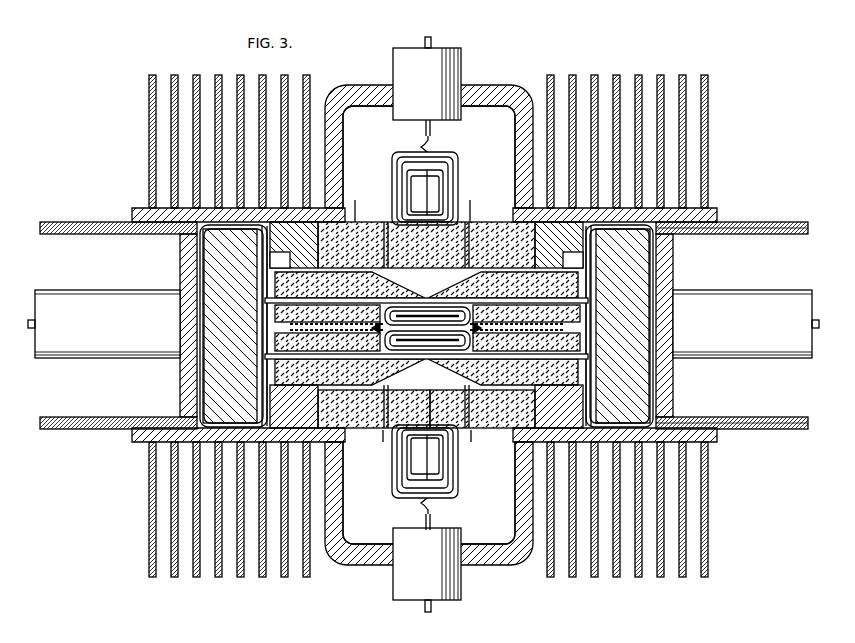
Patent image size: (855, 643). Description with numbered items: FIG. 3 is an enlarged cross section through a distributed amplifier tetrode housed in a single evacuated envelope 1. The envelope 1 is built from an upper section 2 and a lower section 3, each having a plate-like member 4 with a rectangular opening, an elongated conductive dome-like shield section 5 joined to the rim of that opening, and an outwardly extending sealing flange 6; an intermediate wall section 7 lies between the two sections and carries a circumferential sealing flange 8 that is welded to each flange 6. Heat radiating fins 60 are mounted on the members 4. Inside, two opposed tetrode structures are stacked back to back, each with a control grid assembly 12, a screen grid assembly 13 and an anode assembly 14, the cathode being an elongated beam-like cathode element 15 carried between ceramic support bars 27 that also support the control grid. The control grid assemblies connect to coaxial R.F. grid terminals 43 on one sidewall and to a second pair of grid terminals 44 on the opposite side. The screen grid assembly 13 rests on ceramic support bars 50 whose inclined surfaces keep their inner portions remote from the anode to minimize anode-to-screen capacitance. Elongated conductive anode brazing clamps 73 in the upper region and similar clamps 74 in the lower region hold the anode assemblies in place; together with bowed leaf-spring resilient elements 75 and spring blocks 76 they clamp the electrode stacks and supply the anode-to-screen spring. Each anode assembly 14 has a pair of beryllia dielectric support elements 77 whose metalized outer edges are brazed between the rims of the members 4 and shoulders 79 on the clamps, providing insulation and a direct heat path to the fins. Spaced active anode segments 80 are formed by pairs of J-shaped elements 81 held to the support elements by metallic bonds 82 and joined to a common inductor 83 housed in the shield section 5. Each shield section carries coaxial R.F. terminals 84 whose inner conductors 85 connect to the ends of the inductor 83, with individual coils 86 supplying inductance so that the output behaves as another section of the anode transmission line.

The evacuated envelope 1 is at (136, 87).
The upper envelope section 2 is at (514, 82).
The lower envelope section 3 is at (344, 566).
The plate-like member 4 is at (134, 207).
The dome-like shield section 5 is at (355, 85).
The sealing flange 6 is at (780, 222).
The intermediate wall section 7 is at (179, 253).
The circumferential sealing flange 8 is at (776, 234).
The control grid assembly 12 is at (397, 300).
The screen grid assembly 13 is at (462, 292).
The anode assembly 14 is at (349, 195).
The cathode element 15 is at (423, 351).
The ceramic support bars 27 is at (283, 318).
The coaxial R.F. grid terminals 43 is at (30, 326).
The second pair of coaxial R.F. grid terminals 44 is at (819, 323).
The ceramic support bars 50 is at (508, 283).
The heat radiating fins 60 is at (217, 76).
The upper anode brazing clamps 73 is at (283, 243).
The lower anode brazing clamps 74 is at (284, 415).
The resilient elements 75 is at (330, 262).
The spring blocks 76 is at (208, 370).
The dielectric support elements 77 is at (469, 214).
The shoulders 79 is at (322, 256).
The active anode segments 80 is at (434, 268).
The J-shaped elements 81 is at (442, 411).
The metallic bonds 82 is at (382, 411).
The inductor 83 is at (459, 161).
The coaxial R.F. terminals 84 is at (462, 66).
The inner conductors 85 is at (432, 40).
The coils 86 is at (420, 148).